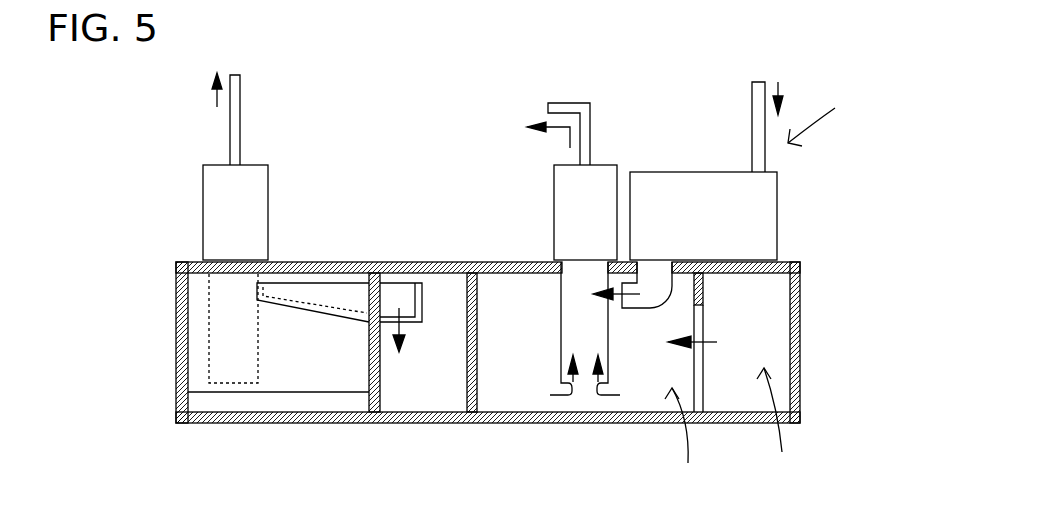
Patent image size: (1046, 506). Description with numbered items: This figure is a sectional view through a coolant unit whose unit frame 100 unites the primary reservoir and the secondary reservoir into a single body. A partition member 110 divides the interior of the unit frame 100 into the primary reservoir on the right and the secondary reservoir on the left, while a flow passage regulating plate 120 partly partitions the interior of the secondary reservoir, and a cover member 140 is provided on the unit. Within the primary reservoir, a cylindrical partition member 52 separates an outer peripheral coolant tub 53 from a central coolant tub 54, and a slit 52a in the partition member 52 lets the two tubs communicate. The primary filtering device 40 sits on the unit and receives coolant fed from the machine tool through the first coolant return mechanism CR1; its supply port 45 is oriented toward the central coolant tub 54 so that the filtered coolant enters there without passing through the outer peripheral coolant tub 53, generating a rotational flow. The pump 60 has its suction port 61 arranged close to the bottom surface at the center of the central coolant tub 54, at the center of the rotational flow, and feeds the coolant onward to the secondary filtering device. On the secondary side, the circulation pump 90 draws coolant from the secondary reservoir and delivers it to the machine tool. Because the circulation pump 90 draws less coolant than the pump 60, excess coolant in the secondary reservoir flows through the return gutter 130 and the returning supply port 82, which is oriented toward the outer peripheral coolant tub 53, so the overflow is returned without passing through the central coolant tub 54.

The unit frame 100 is at (176, 340).
The partition member 52 is at (463, 393).
The flow passage regulating plate 120 is at (278, 395).
The partition member 110 is at (380, 395).
The cover member 140 is at (463, 262).
The return gutter 130 is at (348, 283).
The returning supply port 82 is at (394, 301).
The circulation pump 90 is at (203, 192).
The pump 60 is at (600, 165).
The primary filtering device 40 is at (703, 172).
The first coolant return mechanism CR1 is at (835, 120).
The suction port 61 is at (583, 383).
The supply port 45 is at (632, 308).
The slit 52a is at (700, 387).
The central coolant tub 54 is at (681, 440).
The outer peripheral coolant tub 53 is at (775, 425).